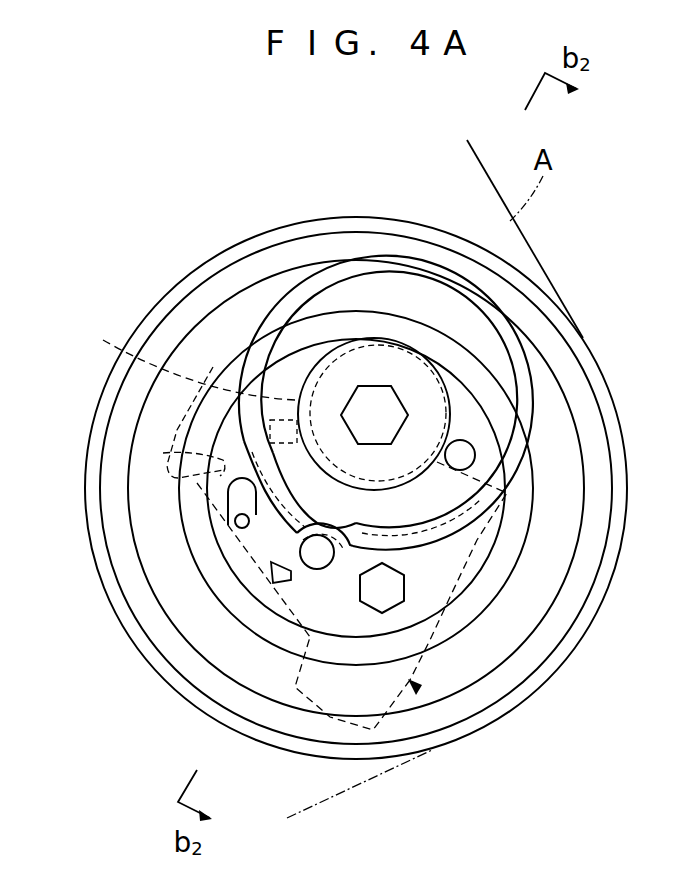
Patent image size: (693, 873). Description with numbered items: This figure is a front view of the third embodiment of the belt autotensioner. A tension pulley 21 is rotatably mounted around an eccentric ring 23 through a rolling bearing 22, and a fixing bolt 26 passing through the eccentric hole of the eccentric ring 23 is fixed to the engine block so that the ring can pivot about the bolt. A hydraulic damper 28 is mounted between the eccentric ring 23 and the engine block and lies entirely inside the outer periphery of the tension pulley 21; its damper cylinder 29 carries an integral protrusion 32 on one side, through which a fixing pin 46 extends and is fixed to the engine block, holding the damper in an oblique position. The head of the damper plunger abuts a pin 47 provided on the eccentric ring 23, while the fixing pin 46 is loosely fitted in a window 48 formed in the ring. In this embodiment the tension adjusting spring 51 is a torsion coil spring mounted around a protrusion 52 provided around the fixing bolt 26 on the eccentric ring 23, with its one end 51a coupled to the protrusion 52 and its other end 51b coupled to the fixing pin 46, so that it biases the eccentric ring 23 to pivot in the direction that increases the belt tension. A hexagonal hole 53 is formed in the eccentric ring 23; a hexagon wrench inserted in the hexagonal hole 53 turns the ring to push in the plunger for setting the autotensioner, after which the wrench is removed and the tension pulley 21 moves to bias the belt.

The tension pulley 21 is at (190, 280).
The rolling bearing 22 is at (240, 272).
The eccentric ring 23 is at (343, 623).
The fixing bolt 26 is at (378, 360).
The hydraulic damper 28 is at (410, 680).
The damper cylinder 29 is at (447, 573).
The protrusion 32 is at (163, 453).
The fixing pin 46 is at (312, 560).
The pin 47 is at (462, 455).
The window 48 is at (243, 547).
The tension adjusting spring 51 is at (518, 367).
The one end of the tension adjusting spring 51a is at (103, 340).
The other end of the tension adjusting spring 51b is at (287, 583).
The protrusion 52 is at (302, 363).
The hexagonal hole 53 is at (383, 597).